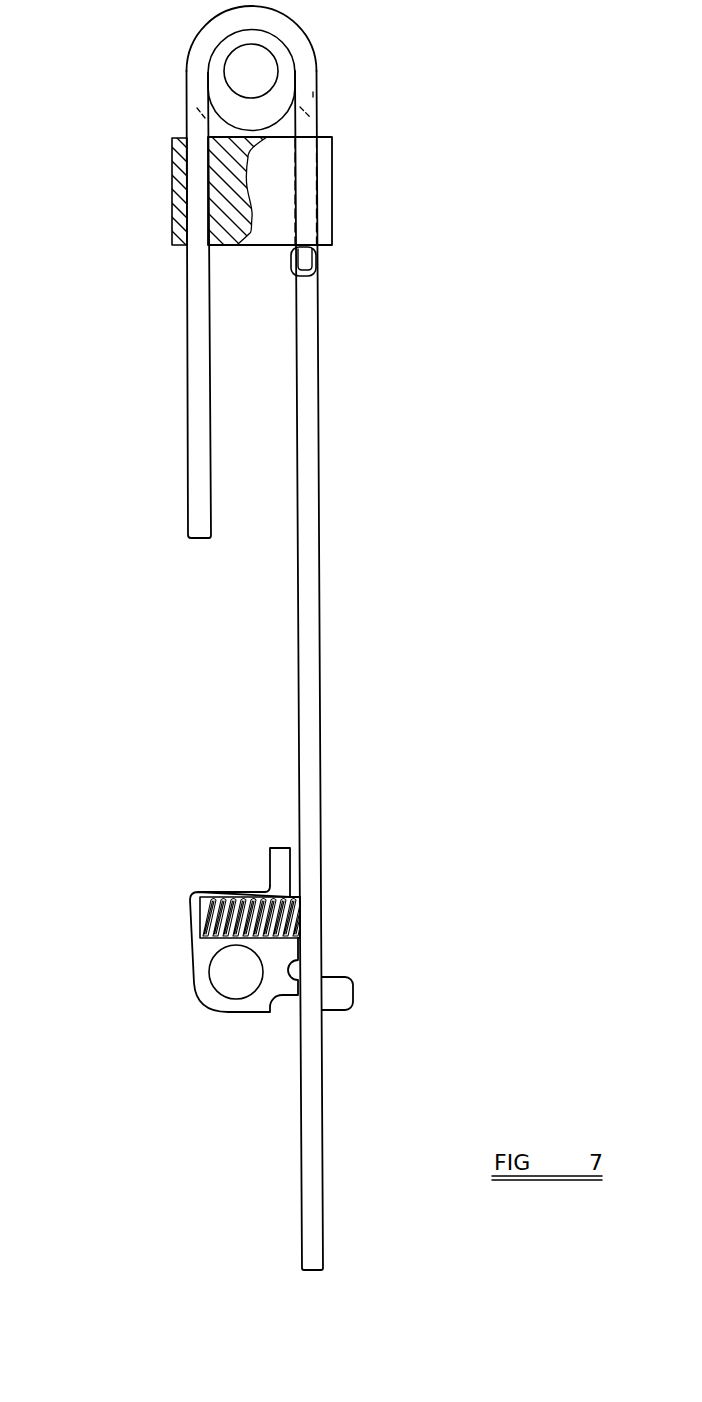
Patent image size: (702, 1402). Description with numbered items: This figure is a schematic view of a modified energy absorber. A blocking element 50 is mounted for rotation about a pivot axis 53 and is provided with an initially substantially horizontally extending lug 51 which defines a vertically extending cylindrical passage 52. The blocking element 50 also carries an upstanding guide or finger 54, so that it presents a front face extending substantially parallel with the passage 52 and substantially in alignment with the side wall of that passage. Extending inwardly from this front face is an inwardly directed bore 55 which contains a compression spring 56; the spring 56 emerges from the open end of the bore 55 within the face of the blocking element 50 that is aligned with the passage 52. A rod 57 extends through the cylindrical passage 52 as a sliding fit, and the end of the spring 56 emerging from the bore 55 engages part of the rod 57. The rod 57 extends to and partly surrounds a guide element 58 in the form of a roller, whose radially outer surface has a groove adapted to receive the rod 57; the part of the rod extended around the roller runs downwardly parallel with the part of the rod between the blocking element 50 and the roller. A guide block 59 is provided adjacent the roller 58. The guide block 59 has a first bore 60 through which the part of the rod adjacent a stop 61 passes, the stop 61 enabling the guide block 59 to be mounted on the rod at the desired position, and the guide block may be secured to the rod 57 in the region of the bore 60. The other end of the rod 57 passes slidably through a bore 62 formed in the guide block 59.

The blocking element 50 is at (182, 962).
The lug 51 is at (353, 997).
The cylindrical passage 52 is at (270, 1010).
The pivot axis 53 is at (222, 972).
The guide or finger 54 is at (283, 862).
The bore 55 is at (218, 910).
The compression spring 56 is at (200, 908).
The rod 57 is at (305, 556).
The guide element 58 is at (253, 78).
The guide block 59 is at (332, 202).
The first bore 60 is at (317, 173).
The stop 61 is at (320, 253).
The bore 62 is at (172, 180).